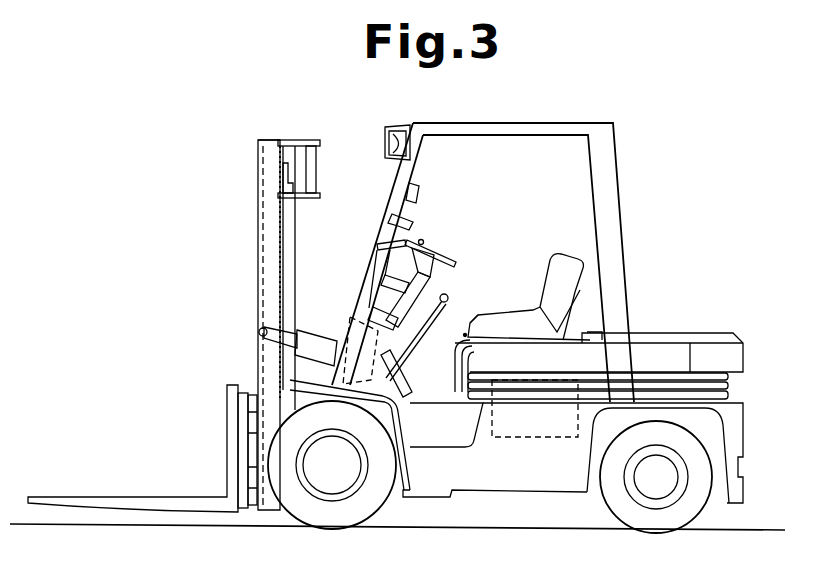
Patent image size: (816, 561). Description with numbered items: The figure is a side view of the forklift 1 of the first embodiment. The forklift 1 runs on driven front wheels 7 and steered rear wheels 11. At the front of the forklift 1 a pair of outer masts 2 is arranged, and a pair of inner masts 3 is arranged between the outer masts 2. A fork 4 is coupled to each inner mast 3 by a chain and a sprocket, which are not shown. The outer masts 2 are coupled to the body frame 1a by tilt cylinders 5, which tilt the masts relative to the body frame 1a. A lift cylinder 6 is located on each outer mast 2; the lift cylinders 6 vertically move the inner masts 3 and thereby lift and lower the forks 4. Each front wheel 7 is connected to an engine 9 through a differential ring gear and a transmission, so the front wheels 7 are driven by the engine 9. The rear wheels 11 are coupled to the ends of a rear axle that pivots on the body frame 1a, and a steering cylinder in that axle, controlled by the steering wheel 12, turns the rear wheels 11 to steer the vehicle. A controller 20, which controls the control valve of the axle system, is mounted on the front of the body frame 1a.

The forklift 1 is at (675, 149).
The body frame 1a is at (512, 485).
The outer masts 2 is at (258, 172).
The inner masts 3 is at (257, 142).
The fork 4 is at (100, 497).
The tilt cylinders 5 is at (341, 350).
The lift cylinder 6 is at (290, 214).
The front wheels 7 is at (379, 506).
The engine 9 is at (563, 440).
The rear wheels 11 is at (702, 510).
The steering wheel 12 is at (448, 265).
The controller 20 is at (352, 318).